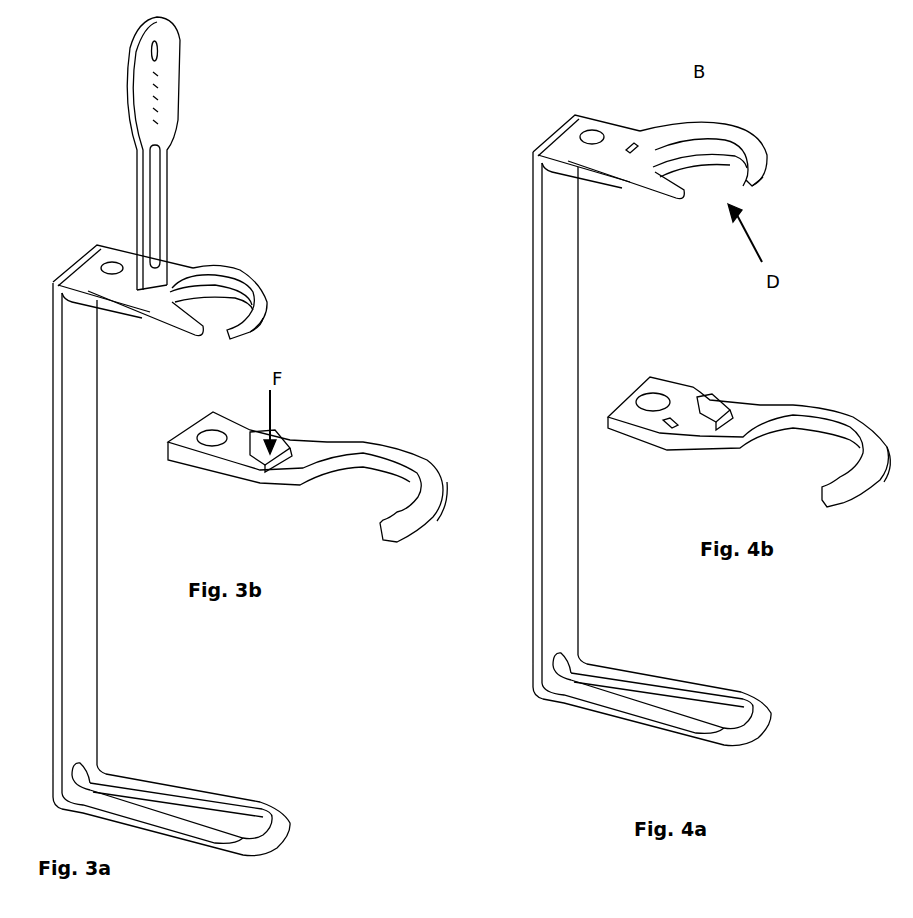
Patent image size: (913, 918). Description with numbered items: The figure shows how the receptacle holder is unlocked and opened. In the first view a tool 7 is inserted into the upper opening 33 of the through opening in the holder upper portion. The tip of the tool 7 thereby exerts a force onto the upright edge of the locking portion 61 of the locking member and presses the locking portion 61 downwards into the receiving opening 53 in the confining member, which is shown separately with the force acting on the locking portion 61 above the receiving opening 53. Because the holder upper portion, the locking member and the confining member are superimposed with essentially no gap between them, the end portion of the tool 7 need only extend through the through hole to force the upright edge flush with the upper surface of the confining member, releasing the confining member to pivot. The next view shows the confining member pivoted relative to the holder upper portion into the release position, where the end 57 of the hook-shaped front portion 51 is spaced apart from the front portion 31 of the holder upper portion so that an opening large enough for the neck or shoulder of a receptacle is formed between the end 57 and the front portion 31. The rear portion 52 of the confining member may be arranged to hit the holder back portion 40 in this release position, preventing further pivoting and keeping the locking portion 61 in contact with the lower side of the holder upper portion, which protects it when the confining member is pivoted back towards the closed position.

In FIG. 3A, the tool 7 is at (165, 130).
In FIG. 3A, the upper opening 33 is at (160, 278).
In FIG. 3B, the locking portion 61 is at (302, 484).
In FIG. 4B, the locking portion 61 is at (749, 414).
In FIG. 3B, the receiving opening 53 is at (265, 470).
In FIG. 4B, the receiving opening 53 is at (712, 418).
In FIG. 4A, the holder back portion 40 is at (535, 328).
In FIG. 4A, the front portion of the holder upper portion 31 is at (660, 197).
In FIG. 4A, the hook-shaped front portion 51 is at (757, 133).
In FIG. 4A, the end of the hook-shaped front portion 57 is at (765, 185).
In FIG. 4B, the rear portion of the confining member 52 is at (640, 385).